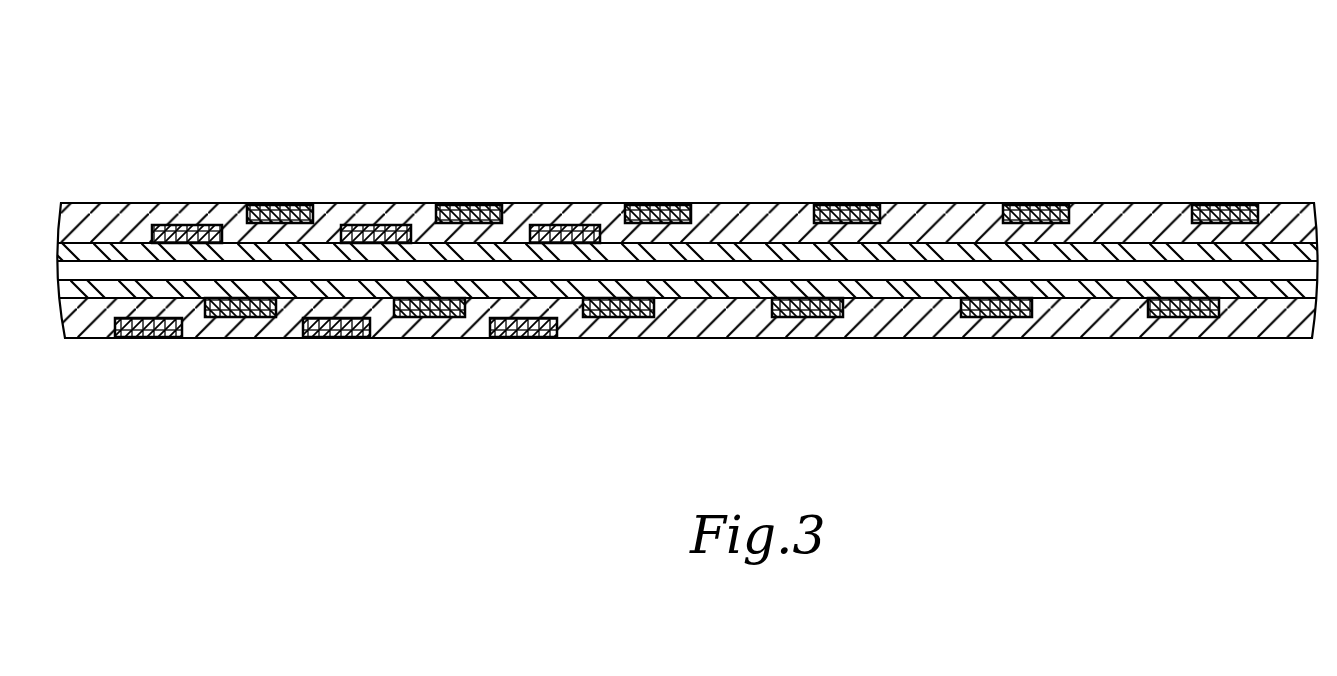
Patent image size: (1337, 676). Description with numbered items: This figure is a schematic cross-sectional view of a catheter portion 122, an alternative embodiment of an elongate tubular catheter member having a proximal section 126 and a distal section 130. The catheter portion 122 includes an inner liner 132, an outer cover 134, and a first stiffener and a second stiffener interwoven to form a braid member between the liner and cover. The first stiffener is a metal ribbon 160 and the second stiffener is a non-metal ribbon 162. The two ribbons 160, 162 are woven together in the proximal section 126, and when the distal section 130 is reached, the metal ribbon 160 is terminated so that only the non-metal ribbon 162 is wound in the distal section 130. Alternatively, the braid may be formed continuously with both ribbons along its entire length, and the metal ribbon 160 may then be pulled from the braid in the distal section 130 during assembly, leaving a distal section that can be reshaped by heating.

The catheter portion 122 is at (977, 385).
The proximal section 126 is at (700, 124).
The distal section 130 is at (1323, 124).
The inner tubular liner 132 is at (1072, 292).
The outer cover 134 is at (243, 328).
The metal ribbon 160 is at (185, 225).
The non-metal ribbon 162 is at (657, 205).